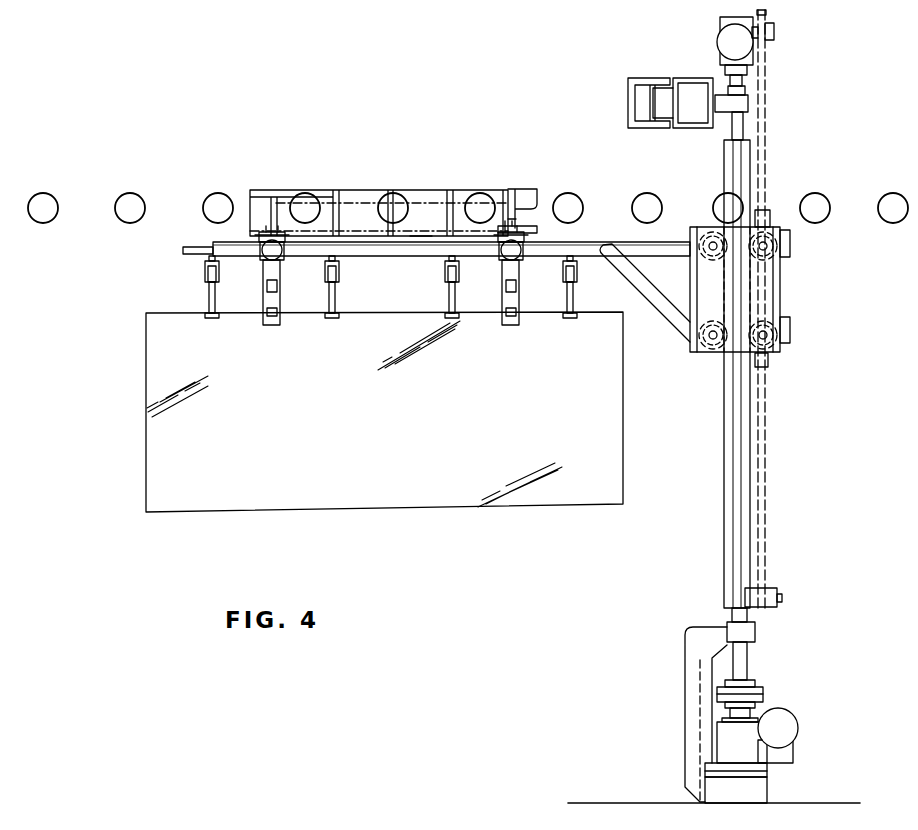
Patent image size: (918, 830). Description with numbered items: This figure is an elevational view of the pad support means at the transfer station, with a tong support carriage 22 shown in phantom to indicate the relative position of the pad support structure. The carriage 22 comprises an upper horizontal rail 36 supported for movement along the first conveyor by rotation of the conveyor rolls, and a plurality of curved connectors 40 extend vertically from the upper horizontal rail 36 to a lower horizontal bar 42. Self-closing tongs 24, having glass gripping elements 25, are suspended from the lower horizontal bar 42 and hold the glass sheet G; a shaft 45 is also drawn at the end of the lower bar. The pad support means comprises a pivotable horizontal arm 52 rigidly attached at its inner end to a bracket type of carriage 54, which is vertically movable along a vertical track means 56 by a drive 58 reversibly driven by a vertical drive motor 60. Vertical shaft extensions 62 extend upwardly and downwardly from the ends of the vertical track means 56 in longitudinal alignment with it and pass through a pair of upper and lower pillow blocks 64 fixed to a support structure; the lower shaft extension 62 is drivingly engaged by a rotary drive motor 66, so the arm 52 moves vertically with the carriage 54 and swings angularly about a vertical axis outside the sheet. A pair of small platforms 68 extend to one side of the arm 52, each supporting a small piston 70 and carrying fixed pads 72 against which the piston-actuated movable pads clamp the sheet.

The tong support carriage 22 is at (360, 182).
The upper horizontal rail 36 is at (495, 229).
The curved connectors 40 is at (530, 204).
The lower horizontal bar 42 is at (540, 229).
The shaft 45 is at (183, 249).
The pivotable horizontal arm 52 is at (421, 253).
The self-closing tongs 24 is at (203, 293).
The glass gripping elements 25 is at (207, 318).
The small piston 70 is at (266, 287).
The small platforms 68 is at (265, 306).
The fixed pads 72 is at (272, 325).
The bracket type of carriage 54 is at (710, 353).
The vertical track means 56 is at (725, 177).
The drive 58 is at (768, 147).
The vertical drive motor 60 is at (720, 37).
The vertical shaft extensions 62 is at (728, 133).
The pillow blocks 64 is at (748, 98).
The rotary drive motor 66 is at (730, 738).
The glass sheet G is at (340, 513).